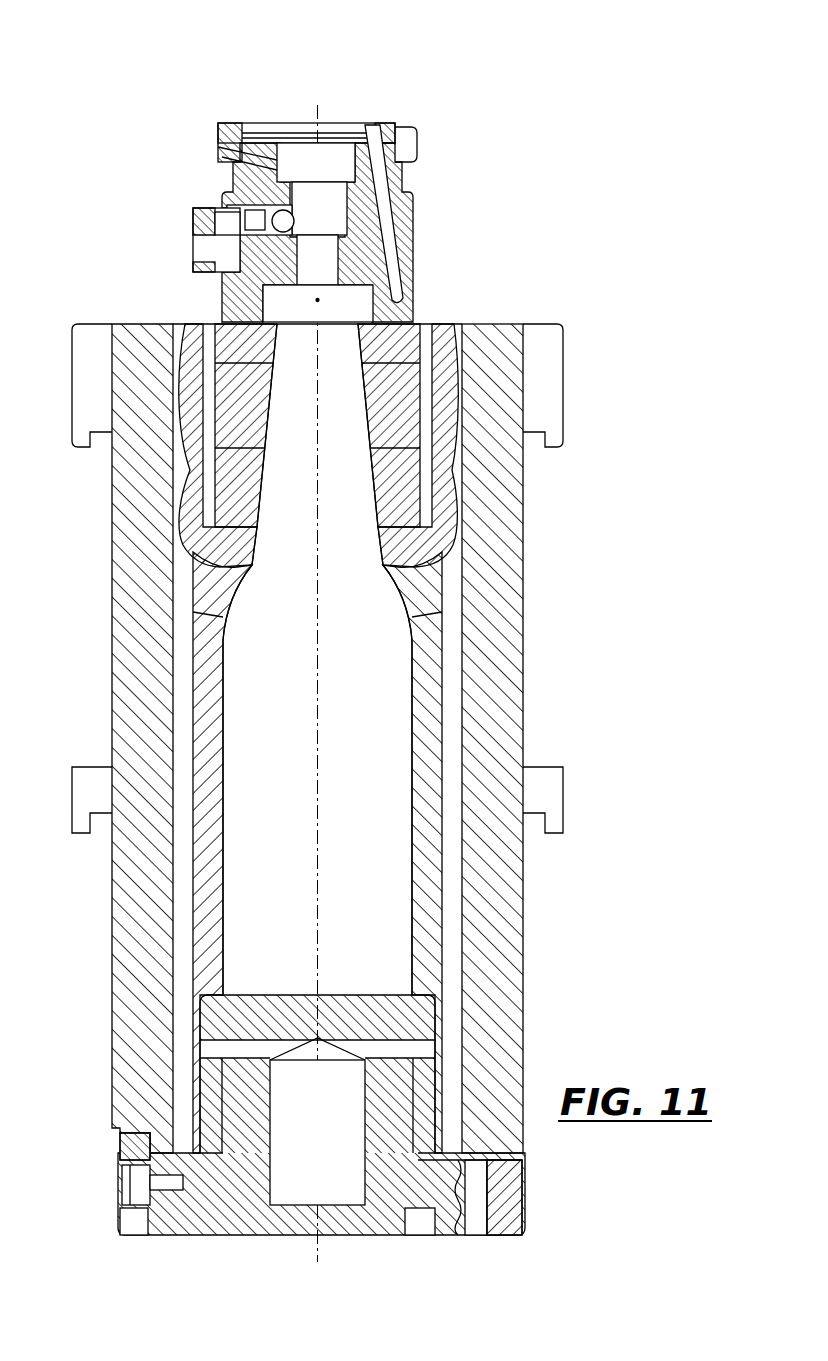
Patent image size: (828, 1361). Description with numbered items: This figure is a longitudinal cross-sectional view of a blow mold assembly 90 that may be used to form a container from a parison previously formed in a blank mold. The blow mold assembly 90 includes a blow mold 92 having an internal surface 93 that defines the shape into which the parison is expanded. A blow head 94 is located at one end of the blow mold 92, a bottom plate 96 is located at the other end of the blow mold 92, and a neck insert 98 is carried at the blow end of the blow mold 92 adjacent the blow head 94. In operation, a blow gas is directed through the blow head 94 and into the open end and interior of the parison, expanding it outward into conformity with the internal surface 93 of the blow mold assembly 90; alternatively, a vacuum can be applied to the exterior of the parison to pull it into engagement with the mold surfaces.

The blow mold assembly 90 is at (590, 72).
The blow mold 92 is at (442, 708).
The internal surface 93 is at (388, 835).
The blow head 94 is at (493, 210).
The bottom plate 96 is at (168, 1259).
The neck insert 98 is at (447, 317).